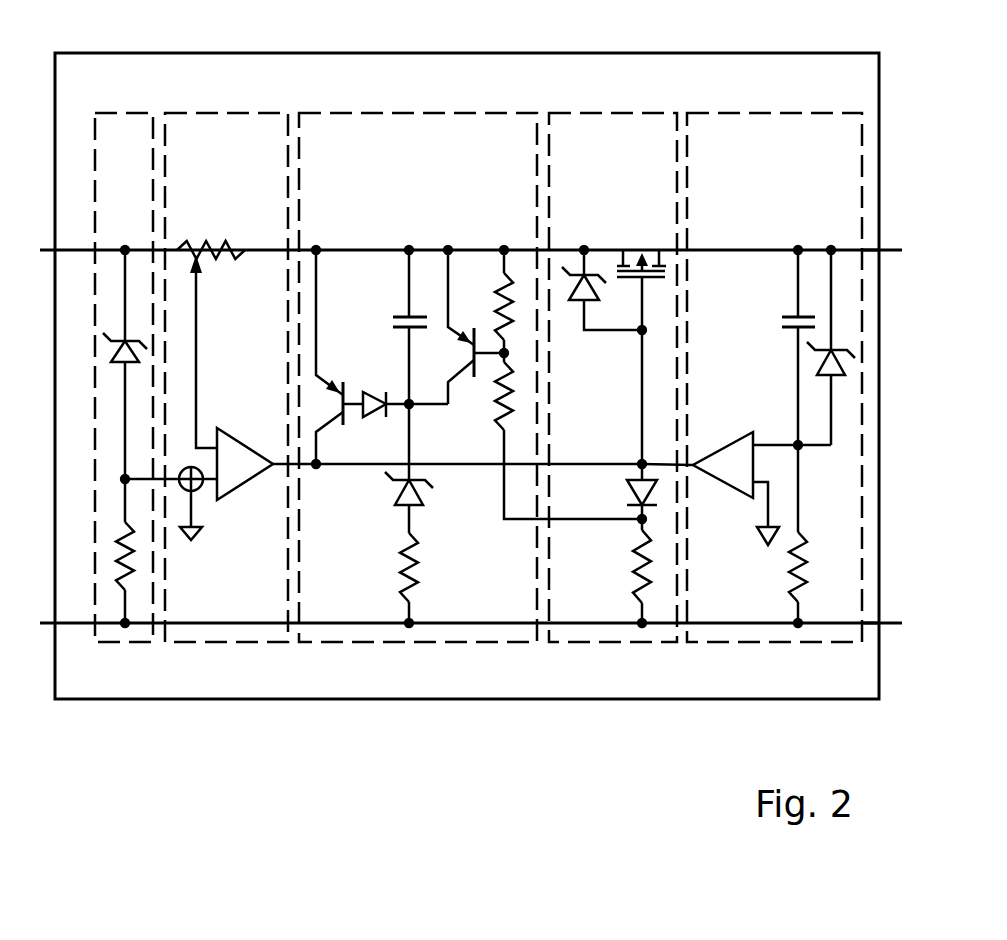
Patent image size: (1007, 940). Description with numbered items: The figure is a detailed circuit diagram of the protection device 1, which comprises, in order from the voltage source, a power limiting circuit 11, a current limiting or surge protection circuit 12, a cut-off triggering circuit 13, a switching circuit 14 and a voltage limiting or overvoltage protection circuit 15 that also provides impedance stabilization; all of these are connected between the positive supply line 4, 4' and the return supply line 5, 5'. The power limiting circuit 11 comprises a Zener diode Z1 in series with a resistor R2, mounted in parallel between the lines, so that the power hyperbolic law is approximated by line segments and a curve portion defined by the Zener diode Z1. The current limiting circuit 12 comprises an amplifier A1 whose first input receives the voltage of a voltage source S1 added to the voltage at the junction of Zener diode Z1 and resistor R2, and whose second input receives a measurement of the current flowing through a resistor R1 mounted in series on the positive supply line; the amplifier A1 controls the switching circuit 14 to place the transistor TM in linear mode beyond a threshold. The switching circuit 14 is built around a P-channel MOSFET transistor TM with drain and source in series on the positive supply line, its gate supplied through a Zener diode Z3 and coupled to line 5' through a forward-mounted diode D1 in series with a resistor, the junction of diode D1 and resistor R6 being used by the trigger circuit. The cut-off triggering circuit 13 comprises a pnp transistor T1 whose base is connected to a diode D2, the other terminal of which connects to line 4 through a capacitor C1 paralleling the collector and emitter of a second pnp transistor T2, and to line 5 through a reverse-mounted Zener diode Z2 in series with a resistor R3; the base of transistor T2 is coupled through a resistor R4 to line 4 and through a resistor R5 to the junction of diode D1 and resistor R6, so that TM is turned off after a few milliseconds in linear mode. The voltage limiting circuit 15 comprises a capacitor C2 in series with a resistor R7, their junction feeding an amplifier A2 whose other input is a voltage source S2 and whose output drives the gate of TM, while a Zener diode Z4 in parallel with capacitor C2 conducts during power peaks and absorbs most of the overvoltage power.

The protection device 1 is at (857, 700).
The positive supply line 4 is at (460, 226).
The positive supply line 4' is at (856, 232).
The supply line 5 is at (460, 651).
The supply line 5' is at (863, 655).
The power limiting circuit 11 is at (140, 645).
The current limiting or surge protection circuit 12 is at (248, 645).
The cut-off triggering circuit 13 is at (400, 645).
The switching circuit 14 is at (592, 645).
The voltage limiting or overvoltage protection circuit 15 is at (720, 645).
The Zener diode Z1 is at (110, 348).
The resistor R1 is at (214, 261).
The resistor R2 is at (117, 560).
The amplifier A1 is at (241, 441).
The voltage source S1 is at (194, 543).
The capacitor C1 is at (398, 316).
The pnp transistor T1 is at (343, 387).
The diode D2 is at (372, 419).
The Zener diode Z2 is at (397, 506).
The resistor R3 is at (418, 547).
The resistor R4 is at (494, 311).
The pnp transistor T2 is at (470, 351).
The resistor R5 is at (491, 394).
The Zener diode Z3 is at (580, 303).
The P-channel MOSFET transistor TM is at (646, 281).
The diode D1 is at (627, 490).
The resistor R6 is at (633, 540).
The capacitor C2 is at (782, 316).
The Zener diode Z4 is at (817, 362).
The amplifier A2 is at (742, 433).
The voltage source S2 is at (758, 537).
The resistor R7 is at (802, 539).